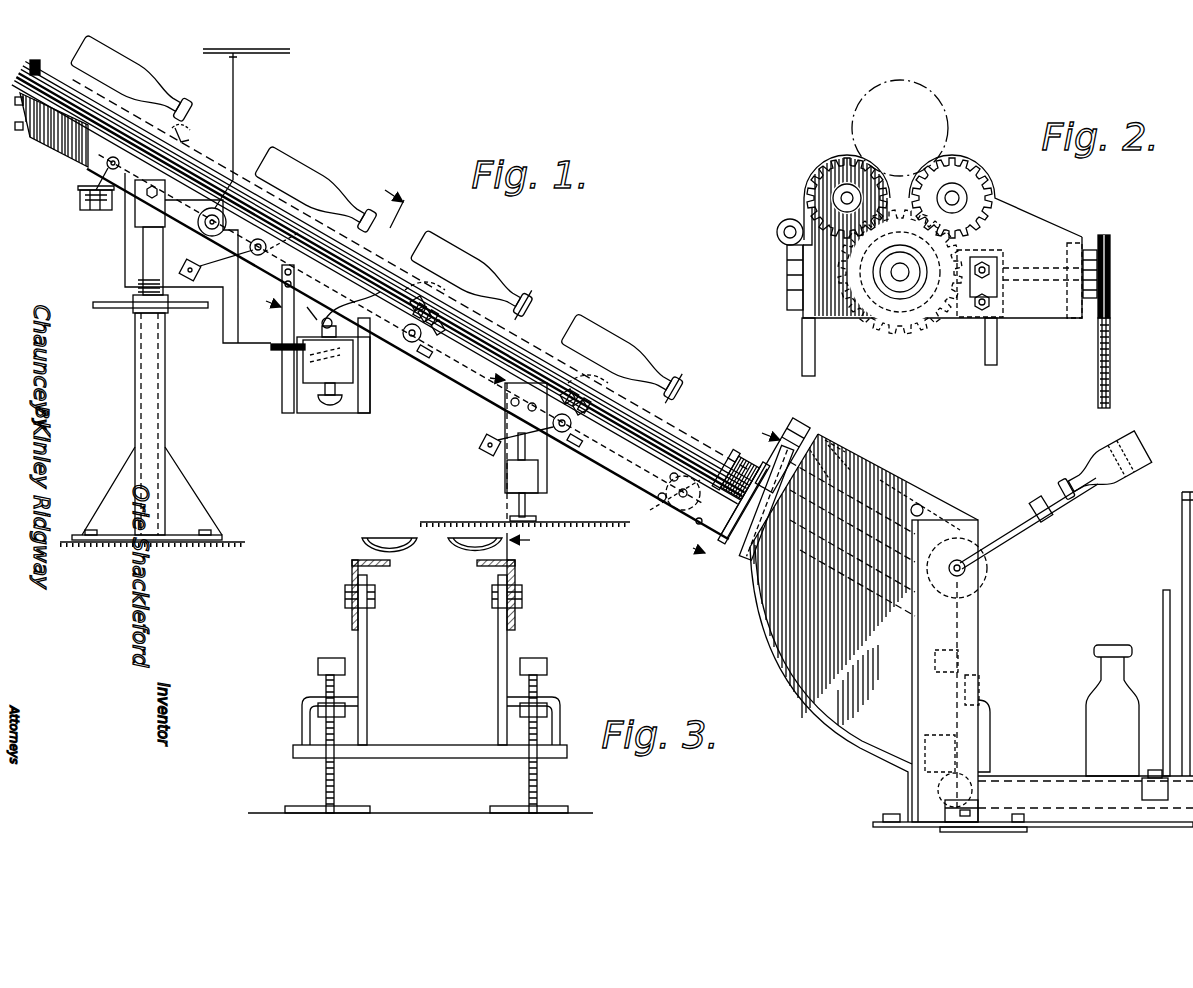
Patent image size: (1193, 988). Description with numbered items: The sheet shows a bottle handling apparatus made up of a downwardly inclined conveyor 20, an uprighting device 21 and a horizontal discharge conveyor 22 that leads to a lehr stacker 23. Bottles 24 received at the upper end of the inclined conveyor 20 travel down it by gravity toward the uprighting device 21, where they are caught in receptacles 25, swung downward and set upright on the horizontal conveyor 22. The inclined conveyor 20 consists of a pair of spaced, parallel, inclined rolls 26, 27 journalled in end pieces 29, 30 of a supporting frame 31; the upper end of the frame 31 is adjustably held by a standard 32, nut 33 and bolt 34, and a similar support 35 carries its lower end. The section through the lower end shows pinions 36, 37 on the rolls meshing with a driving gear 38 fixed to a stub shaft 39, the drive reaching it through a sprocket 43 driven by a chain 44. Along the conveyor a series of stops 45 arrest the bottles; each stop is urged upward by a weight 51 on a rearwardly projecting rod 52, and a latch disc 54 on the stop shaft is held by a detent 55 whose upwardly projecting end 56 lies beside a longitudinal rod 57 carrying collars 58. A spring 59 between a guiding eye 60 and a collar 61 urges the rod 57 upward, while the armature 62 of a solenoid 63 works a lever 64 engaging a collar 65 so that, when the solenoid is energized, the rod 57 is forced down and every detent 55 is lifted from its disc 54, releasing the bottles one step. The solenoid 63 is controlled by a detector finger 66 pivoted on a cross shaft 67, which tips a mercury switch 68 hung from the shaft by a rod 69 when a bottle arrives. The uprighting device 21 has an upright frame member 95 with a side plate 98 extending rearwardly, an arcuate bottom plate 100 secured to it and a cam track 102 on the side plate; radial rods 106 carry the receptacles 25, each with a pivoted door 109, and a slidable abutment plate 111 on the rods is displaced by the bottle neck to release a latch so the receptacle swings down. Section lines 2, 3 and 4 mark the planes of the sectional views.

In FIG. 1, the inclined conveyor 20 is at (549, 318).
In FIG. 1, the uprighting device 21 is at (902, 470).
In FIG. 1, the horizontal discharge conveyor 22 is at (1020, 776).
In FIG. 1, the lehr stacker 23 is at (1164, 630).
In FIG. 1, the bottles 24 is at (140, 66).
In FIG. 2, the bottles 24 is at (945, 112).
In FIG. 1, the receptacles 25 is at (813, 445).
In FIG. 1, the roll 26 is at (203, 152).
In FIG. 2, the roll 26 is at (818, 180).
In FIG. 3, the roll 26 is at (362, 541).
In FIG. 2, the roll 27 is at (980, 180).
In FIG. 3, the roll 27 is at (505, 543).
In FIG. 1, the end piece 29 is at (36, 62).
In FIG. 1, the end piece 30 is at (741, 470).
In FIG. 1, the supporting frame 31 is at (627, 476).
In FIG. 3, the supporting frame 31 is at (516, 578).
In FIG. 1, the standard 32 is at (135, 362).
In FIG. 1, the nut 33 is at (136, 311).
In FIG. 1, the bolt 34 is at (125, 268).
In FIG. 1, the support 35 is at (505, 481).
In FIG. 3, the support 35 is at (560, 712).
In FIG. 1, the pinion 36 is at (737, 462).
In FIG. 2, the pinion 36 is at (836, 172).
In FIG. 2, the pinion 37 is at (962, 170).
In FIG. 1, the driving gear 38 is at (744, 484).
In FIG. 2, the driving gear 38 is at (898, 326).
In FIG. 2, the stub shaft 39 is at (898, 278).
In FIG. 1, the sprocket 43 is at (668, 506).
In FIG. 2, the sprocket 43 is at (1112, 306).
In FIG. 1, the chain 44 is at (740, 556).
In FIG. 2, the chain 44 is at (1112, 349).
In FIG. 1, the stops 45 is at (524, 310).
In FIG. 1, the weight 51 is at (197, 266).
In FIG. 1, the rearwardly projecting rod 52 is at (200, 272).
In FIG. 1, the latch disc 54 is at (408, 343).
In FIG. 1, the detent 55 is at (425, 358).
In FIG. 1, the upwardly projecting end 56 is at (440, 335).
In FIG. 1, the longitudinal rod 57 is at (450, 346).
In FIG. 2, the longitudinal rod 57 is at (790, 243).
In FIG. 1, the collars 58 is at (425, 310).
In FIG. 1, the spring 59 is at (582, 385).
In FIG. 1, the guiding eye 60 is at (590, 400).
In FIG. 2, the guiding eye 60 is at (780, 228).
In FIG. 1, the collar 61 is at (567, 362).
In FIG. 1, the armature 62 is at (290, 346).
In FIG. 1, the solenoid 63 is at (297, 372).
In FIG. 1, the lever 64 is at (333, 310).
In FIG. 1, the collar 65 is at (415, 288).
In FIG. 1, the detector finger 66 is at (193, 128).
In FIG. 1, the cross shaft 67 is at (104, 166).
In FIG. 1, the mercury switch 68 is at (92, 210).
In FIG. 1, the rod 69 is at (80, 198).
In FIG. 1, the frame member 95 is at (976, 628).
In FIG. 1, the side plate 98 is at (922, 510).
In FIG. 1, the arcuate bottom plate 100 is at (812, 714).
In FIG. 1, the cam track 102 is at (848, 448).
In FIG. 1, the rod 106 is at (1076, 504).
In FIG. 1, the door 109 is at (790, 432).
In FIG. 1, the abutment plate 111 is at (926, 500).
In FIG. 1, the section line 2— 2 is at (727, 487).
In FIG. 1, the section line 3— 3 is at (491, 441).
In FIG. 3, the section line 3— 3 is at (518, 538).
In FIG. 1, the section line 4 is at (327, 245).